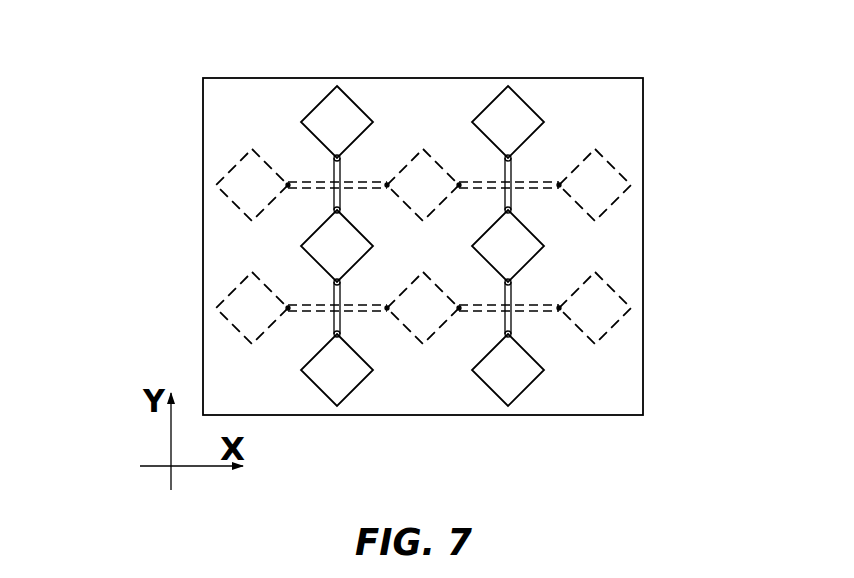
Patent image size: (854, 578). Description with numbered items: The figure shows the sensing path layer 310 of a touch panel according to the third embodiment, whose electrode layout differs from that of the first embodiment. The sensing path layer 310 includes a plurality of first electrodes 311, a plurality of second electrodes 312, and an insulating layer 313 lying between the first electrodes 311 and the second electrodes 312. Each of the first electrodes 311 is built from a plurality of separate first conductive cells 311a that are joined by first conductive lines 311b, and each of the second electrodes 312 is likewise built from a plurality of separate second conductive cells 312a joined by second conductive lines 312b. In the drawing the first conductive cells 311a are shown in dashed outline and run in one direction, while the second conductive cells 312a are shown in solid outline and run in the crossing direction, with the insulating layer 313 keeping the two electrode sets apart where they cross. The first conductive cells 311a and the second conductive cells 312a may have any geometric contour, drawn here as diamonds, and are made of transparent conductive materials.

The sensing path layer 310 is at (178, 110).
The first electrodes 311 is at (623, 163).
The first conductive cells 311a is at (603, 198).
The first conductive lines 311b is at (537, 187).
The second electrodes 312 is at (532, 97).
The second conductive cells 312a is at (503, 117).
The second conductive lines 312b is at (507, 157).
The insulating layer 313 is at (610, 373).